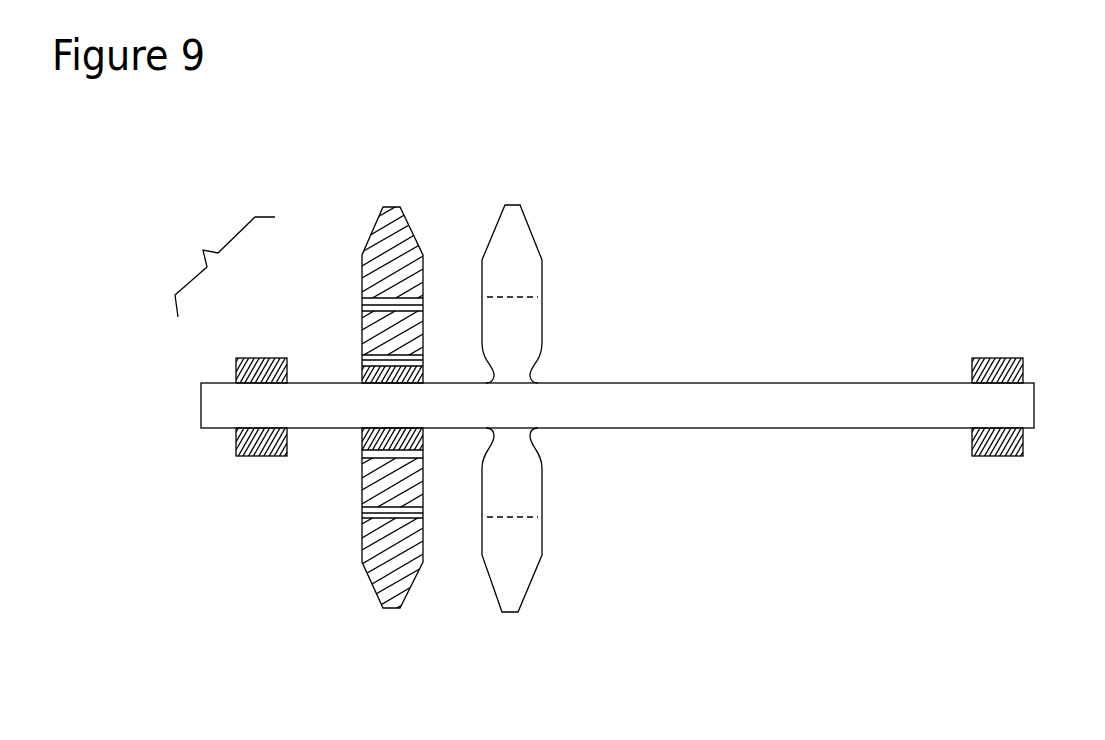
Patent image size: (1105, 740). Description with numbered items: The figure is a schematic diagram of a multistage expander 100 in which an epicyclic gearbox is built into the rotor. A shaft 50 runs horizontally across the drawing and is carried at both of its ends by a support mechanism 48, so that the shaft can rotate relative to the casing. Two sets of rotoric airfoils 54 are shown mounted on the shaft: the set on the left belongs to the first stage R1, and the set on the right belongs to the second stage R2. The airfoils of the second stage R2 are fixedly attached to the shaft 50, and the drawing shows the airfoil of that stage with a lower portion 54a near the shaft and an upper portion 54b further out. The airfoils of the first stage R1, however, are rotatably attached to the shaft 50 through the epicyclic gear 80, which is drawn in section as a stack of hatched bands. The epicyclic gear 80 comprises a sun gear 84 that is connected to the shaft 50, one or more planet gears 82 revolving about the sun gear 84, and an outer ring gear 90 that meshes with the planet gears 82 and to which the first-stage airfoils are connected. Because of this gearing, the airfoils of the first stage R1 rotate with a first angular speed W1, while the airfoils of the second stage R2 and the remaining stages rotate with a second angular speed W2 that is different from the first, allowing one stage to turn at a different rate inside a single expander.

The expander 100 is at (680, 48).
The shaft 50 is at (798, 398).
The support mechanism 48 is at (245, 445).
The rotoric airfoils 54 is at (429, 418).
The gear lower portion 54a is at (510, 578).
The gear upper portion 54b is at (525, 490).
The epicyclic gear 80 is at (225, 267).
The planet gears 82 is at (367, 332).
The sun gear 84 is at (370, 375).
The outer ring gear 90 is at (363, 303).
The first stage R1 is at (385, 167).
The second stage R2 is at (530, 168).
The first angular speed W1 is at (312, 220).
The second angular speed W2 is at (448, 220).